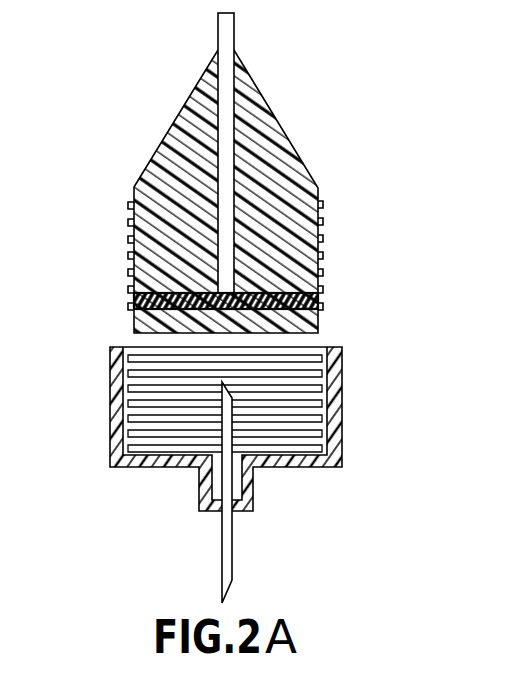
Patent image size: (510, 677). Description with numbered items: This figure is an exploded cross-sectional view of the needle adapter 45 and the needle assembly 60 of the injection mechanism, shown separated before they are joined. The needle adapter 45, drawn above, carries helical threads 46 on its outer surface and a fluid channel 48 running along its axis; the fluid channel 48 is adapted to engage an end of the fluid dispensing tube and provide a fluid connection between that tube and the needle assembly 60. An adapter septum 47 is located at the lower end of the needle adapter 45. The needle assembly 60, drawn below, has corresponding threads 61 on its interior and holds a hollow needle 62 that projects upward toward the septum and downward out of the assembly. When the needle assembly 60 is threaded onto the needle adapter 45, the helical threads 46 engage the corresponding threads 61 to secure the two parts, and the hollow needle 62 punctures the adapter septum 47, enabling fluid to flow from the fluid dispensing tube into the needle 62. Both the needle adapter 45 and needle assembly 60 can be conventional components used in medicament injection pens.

The needle adapter 45 is at (271, 155).
The helical threads 46 is at (323, 243).
The adapter septum 47 is at (138, 309).
The fluid channel 48 is at (224, 49).
The needle assembly 60 is at (342, 432).
The corresponding threads 61 is at (315, 403).
The hollow needle 62 is at (222, 555).